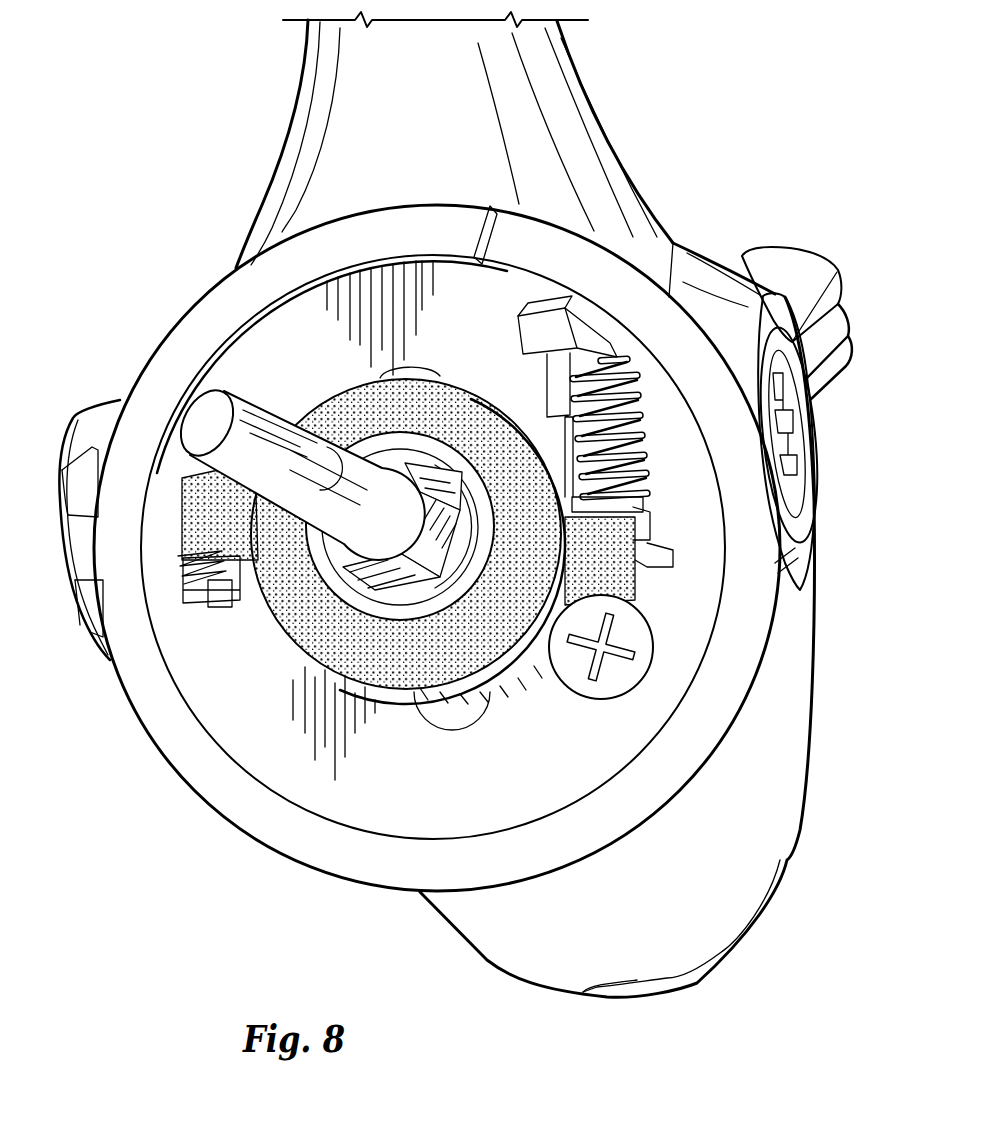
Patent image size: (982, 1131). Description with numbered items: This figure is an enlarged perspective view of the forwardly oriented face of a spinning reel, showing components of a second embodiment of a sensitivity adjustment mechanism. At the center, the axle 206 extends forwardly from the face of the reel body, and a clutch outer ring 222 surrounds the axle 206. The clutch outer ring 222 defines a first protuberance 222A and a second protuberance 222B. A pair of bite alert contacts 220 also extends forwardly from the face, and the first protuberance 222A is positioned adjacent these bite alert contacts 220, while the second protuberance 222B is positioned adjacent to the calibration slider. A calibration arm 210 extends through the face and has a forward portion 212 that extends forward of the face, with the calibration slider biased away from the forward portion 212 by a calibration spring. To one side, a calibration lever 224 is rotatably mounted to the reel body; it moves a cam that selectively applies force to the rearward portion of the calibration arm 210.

The axle 206 is at (198, 418).
The calibration arm 210 is at (587, 343).
The forward portion 212 is at (610, 428).
The bite alert contacts 220 is at (197, 578).
The clutch outer ring 222 is at (450, 403).
The first protuberance 222A is at (197, 480).
The second protuberance 222B is at (617, 565).
The calibration lever 224 is at (787, 270).